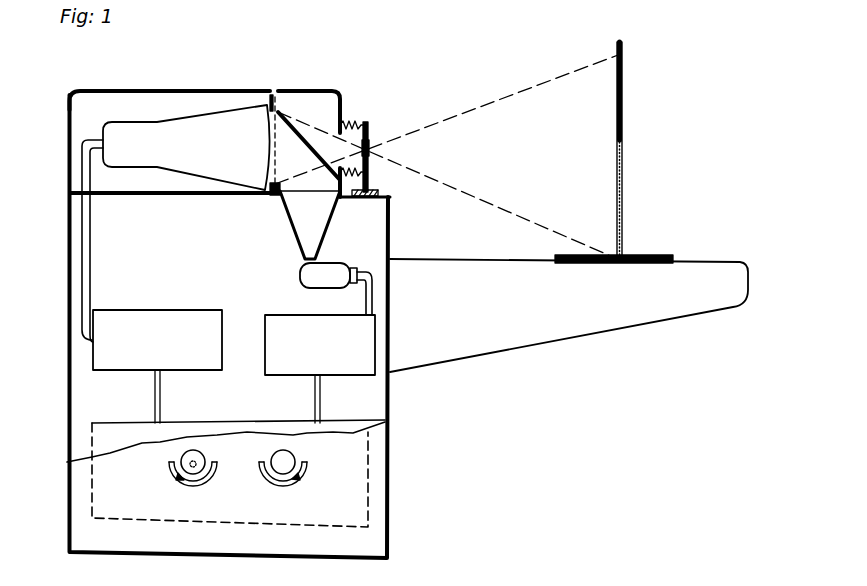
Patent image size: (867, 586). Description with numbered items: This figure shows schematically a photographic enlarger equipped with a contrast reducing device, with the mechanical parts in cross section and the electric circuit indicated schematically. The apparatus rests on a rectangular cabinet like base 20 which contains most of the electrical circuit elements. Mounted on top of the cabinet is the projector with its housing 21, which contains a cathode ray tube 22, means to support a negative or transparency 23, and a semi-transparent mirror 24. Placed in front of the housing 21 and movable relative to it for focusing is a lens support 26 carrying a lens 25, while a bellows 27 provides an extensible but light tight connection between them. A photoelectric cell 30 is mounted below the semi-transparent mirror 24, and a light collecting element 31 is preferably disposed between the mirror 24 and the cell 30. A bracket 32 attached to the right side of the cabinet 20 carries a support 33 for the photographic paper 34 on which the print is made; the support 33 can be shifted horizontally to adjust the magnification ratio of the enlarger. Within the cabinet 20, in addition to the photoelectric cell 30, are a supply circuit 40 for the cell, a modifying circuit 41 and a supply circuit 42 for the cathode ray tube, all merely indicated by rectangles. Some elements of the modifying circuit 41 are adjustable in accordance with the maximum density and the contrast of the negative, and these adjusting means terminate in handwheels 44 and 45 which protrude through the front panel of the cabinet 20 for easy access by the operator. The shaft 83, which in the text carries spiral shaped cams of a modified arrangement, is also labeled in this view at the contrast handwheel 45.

The cabinet like base 20 is at (68, 323).
The housing 21 is at (137, 92).
The cathode ray tube 22 is at (197, 118).
The negative or transparency 23 is at (275, 167).
The semi-transparent mirror 24 is at (304, 140).
The lens 25 is at (370, 146).
The lens support 26 is at (370, 124).
The bellows 27 is at (347, 123).
The photoelectric cell 30 is at (310, 277).
The light collecting element 31 is at (327, 231).
The bracket 32 is at (420, 260).
The support 33 is at (623, 203).
The photographic paper 34 is at (615, 138).
The supply circuit 40 is at (320, 369).
The modifying circuit 41 is at (202, 426).
The supply circuit 42 is at (157, 366).
The handwheel 44 is at (286, 464).
The handwheel 45 is at (198, 462).
The shaft 83 is at (189, 462).